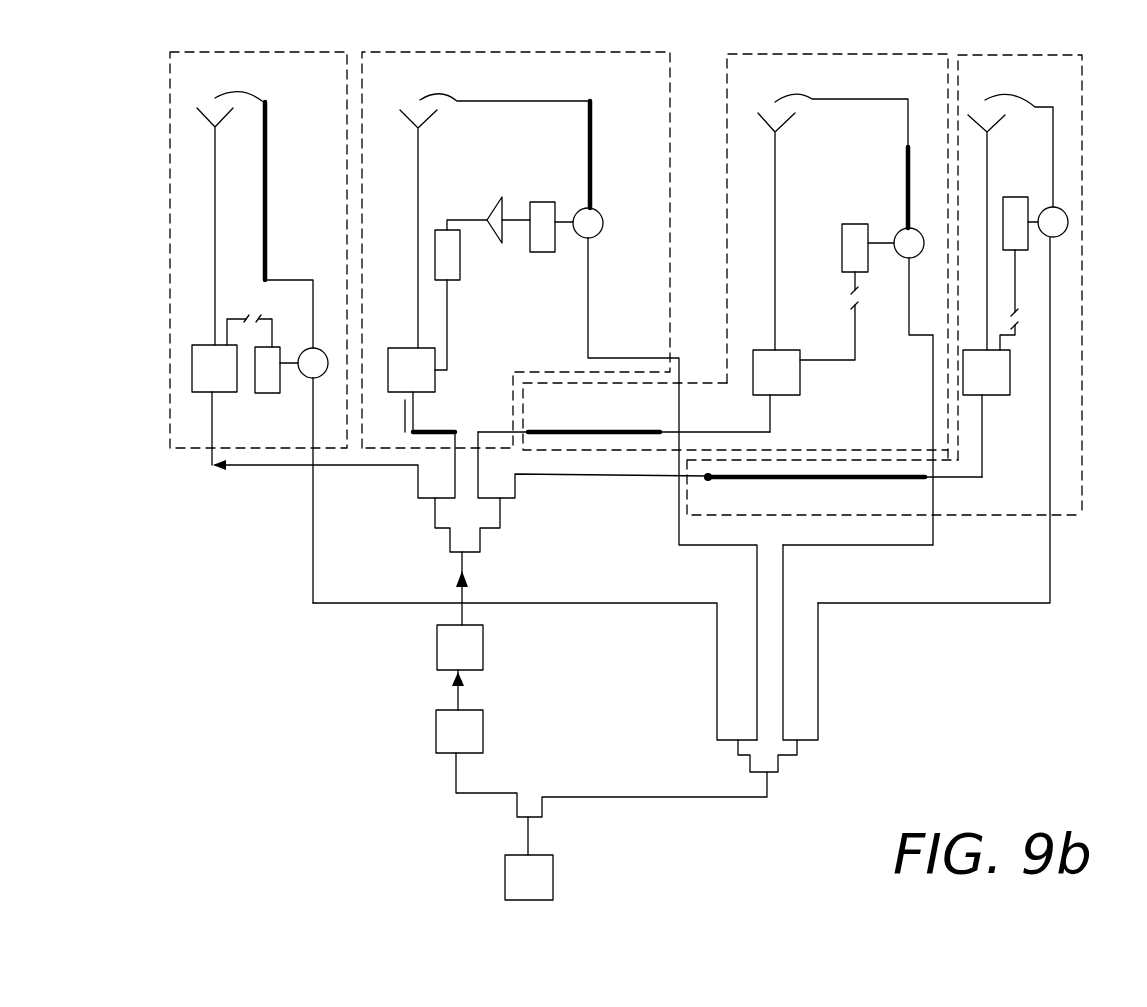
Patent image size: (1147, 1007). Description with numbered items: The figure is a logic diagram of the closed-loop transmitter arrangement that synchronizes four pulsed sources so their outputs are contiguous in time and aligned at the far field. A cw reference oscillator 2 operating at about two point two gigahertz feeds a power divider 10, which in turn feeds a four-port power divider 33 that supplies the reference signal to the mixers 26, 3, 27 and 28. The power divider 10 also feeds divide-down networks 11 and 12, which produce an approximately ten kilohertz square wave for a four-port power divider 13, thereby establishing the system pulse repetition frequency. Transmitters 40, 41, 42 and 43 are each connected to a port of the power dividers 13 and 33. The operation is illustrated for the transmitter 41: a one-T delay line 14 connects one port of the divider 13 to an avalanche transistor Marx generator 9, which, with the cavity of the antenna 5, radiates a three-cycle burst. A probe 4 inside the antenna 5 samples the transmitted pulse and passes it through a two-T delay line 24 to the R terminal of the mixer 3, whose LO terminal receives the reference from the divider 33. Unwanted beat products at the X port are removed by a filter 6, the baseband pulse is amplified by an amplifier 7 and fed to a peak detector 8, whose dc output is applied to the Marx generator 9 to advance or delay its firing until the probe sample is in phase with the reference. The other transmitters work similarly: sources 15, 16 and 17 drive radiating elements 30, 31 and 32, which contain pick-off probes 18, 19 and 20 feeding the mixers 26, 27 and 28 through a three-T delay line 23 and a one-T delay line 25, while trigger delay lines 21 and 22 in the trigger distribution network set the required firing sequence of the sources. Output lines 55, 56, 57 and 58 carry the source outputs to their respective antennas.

The cw reference oscillator 2 is at (529, 858).
The mixer 3 is at (604, 219).
The probe 4 is at (437, 97).
The antenna 5 is at (410, 130).
The filter 6 is at (555, 200).
The amplifier 7 is at (486, 208).
The peak detector 8 is at (460, 252).
The avalanche transistor Marx generator 9 is at (403, 348).
The power divider 10 is at (539, 805).
The divide-down network 11 is at (459, 711).
The divide-down network 12 is at (681, 488).
The four-port power divider 13 is at (497, 521).
The 1T delay line 14 is at (452, 432).
The source 15 is at (207, 345).
The source 16 is at (800, 372).
The source 17 is at (997, 398).
The pick-off probe 18 is at (228, 96).
The pick-off probe 19 is at (798, 97).
The pick-off probe 20 is at (1018, 97).
The delay line 21 is at (558, 428).
The delay line 22 is at (812, 480).
The 3T delay line 23 is at (268, 223).
The 2T delay line 24 is at (595, 125).
The 1T delay line 25 is at (905, 178).
The mixer 26 is at (320, 352).
The mixer 27 is at (898, 230).
The mixer 28 is at (1065, 233).
The antenna 30 is at (211, 130).
The antenna 31 is at (766, 130).
The antenna 32 is at (1005, 135).
The four-port power divider 33 is at (797, 752).
The transmitter 40 is at (313, 50).
The transmitter 41 is at (573, 50).
The transmitter 42 is at (882, 52).
The transmitter 43 is at (1062, 53).
The output line 55 is at (218, 429).
The output line 56 is at (408, 429).
The output line 57 is at (772, 421).
The output line 58 is at (984, 450).